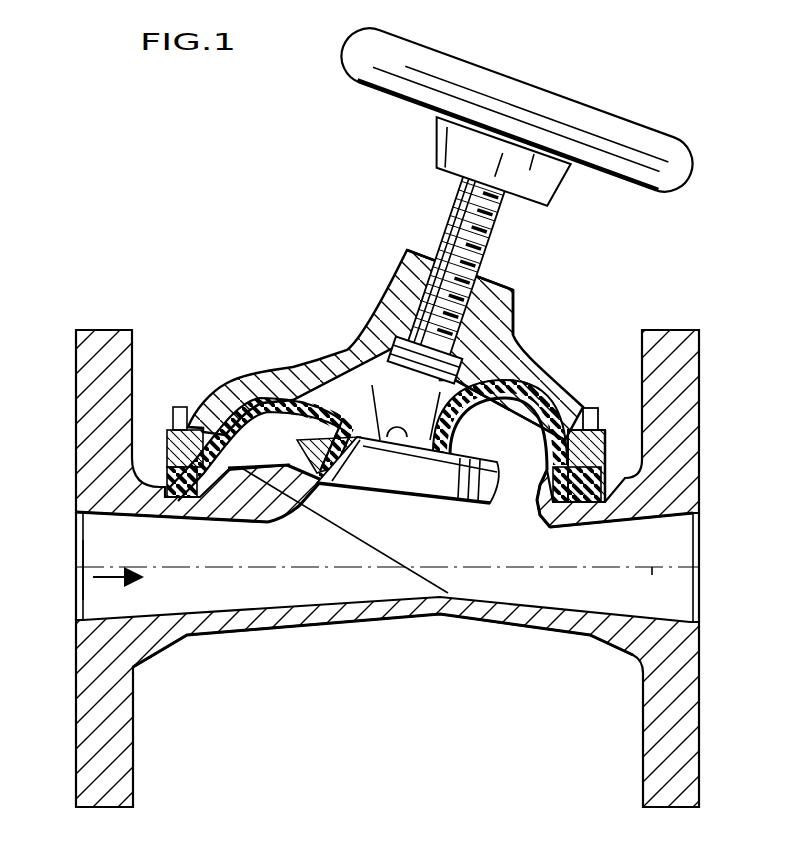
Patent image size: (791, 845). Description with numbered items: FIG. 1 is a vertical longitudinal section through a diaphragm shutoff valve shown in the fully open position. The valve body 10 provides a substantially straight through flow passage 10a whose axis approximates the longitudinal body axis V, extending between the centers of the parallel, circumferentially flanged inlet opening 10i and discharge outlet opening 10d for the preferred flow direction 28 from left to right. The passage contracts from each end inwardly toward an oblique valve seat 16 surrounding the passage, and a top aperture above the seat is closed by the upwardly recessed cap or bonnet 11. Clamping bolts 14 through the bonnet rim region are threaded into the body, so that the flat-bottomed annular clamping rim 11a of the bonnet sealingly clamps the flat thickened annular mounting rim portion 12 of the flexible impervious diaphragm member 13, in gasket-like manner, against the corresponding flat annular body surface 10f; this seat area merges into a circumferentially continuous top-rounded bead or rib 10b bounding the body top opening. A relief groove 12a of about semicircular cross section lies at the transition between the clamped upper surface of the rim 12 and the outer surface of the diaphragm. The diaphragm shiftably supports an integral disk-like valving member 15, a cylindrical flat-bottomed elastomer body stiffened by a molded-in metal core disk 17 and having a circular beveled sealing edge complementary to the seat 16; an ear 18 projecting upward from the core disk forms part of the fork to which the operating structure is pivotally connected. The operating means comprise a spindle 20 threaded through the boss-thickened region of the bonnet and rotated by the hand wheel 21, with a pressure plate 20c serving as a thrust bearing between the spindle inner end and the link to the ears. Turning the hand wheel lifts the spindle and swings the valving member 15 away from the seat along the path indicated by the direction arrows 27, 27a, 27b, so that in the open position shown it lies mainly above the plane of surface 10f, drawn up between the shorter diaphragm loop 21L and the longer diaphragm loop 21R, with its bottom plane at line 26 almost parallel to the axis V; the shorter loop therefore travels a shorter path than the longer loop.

The valve body 10 is at (256, 616).
The through flow passage 10a is at (166, 558).
The top-rounded bead or rib 10b is at (533, 487).
The discharge outlet opening 10d is at (688, 596).
The diaphragm-mounting flat annular body surface 10f is at (190, 480).
The inlet opening 10i is at (90, 597).
The bonnet 11 is at (530, 377).
The annular clamping rim 11a is at (165, 452).
The annular mounting rim portion 12 is at (596, 500).
The relief groove 12a is at (603, 447).
The diaphragm member 13 is at (460, 410).
The bonnet-securing and clamping bolts 14 is at (595, 408).
The valving member 15 is at (410, 482).
The oblique valve seat 16 is at (320, 533).
The metal core disk 17 is at (320, 478).
The ear 18 is at (377, 403).
The spindle 20 is at (458, 212).
The pressure plate 20c is at (398, 296).
The hand wheel 21 is at (625, 132).
The shorter diaphragm loop 21L is at (250, 410).
The longer diaphragm loop 21R is at (565, 393).
The bottom-plane line 26 is at (545, 512).
The direction arrow 27 is at (296, 490).
The direction arrow 27a is at (377, 507).
The direction arrow 27b is at (480, 522).
The preferred flow direction 28 is at (113, 580).
The longitudinal body axis V is at (652, 568).